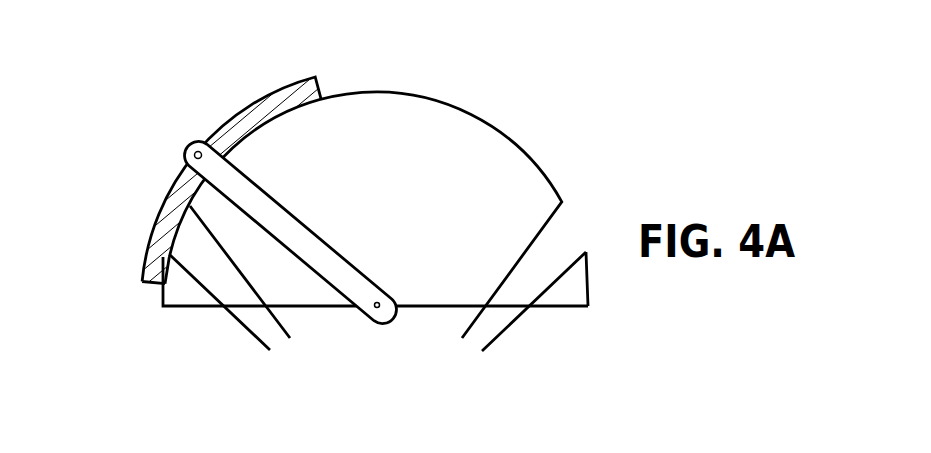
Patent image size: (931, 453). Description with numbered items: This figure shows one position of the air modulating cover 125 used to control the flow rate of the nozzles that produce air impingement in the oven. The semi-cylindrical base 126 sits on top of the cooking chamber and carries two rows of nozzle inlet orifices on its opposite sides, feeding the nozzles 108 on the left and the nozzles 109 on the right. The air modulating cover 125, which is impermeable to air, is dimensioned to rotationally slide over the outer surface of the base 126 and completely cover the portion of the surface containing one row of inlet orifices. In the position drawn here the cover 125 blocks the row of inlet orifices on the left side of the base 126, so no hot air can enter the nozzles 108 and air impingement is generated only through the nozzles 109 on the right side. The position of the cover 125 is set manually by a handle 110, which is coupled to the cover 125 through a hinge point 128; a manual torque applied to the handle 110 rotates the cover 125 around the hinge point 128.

The nozzles 108 is at (222, 282).
The nozzles 109 is at (525, 282).
The handle 110 is at (242, 195).
The air modulating cover 125 is at (277, 98).
The semi-cylindrical base 126 is at (455, 163).
The hinge point 128 is at (372, 312).